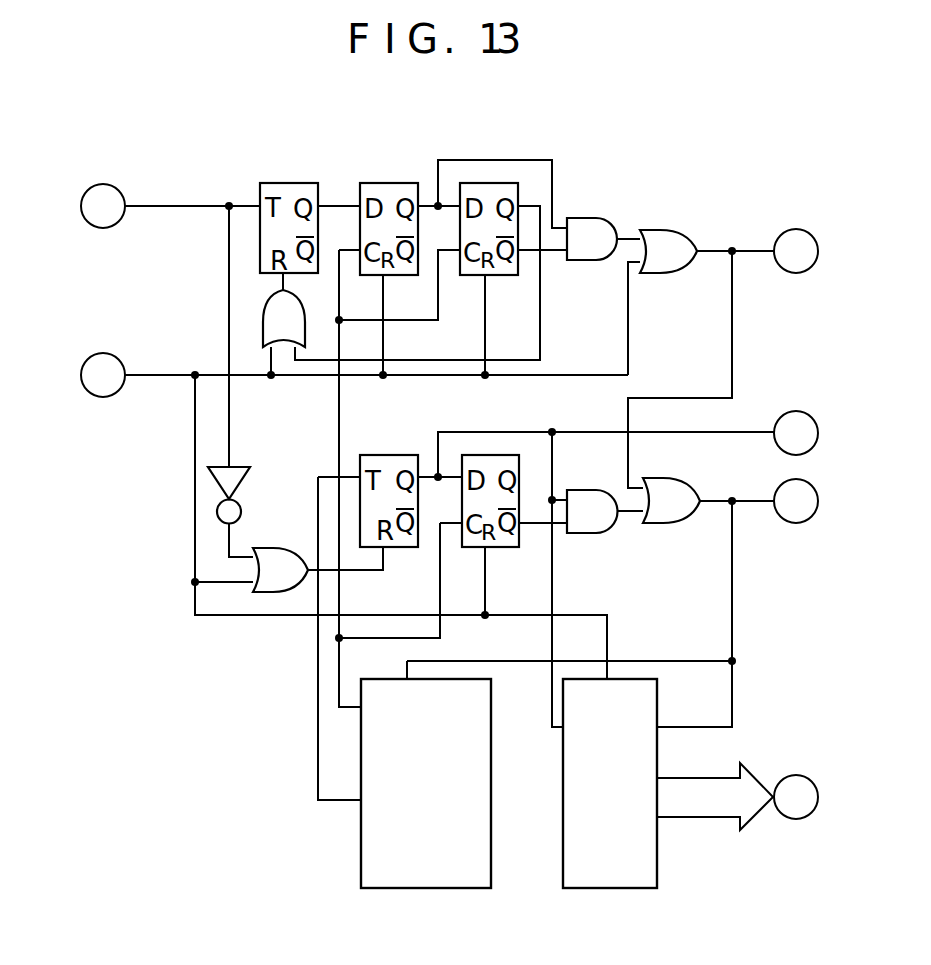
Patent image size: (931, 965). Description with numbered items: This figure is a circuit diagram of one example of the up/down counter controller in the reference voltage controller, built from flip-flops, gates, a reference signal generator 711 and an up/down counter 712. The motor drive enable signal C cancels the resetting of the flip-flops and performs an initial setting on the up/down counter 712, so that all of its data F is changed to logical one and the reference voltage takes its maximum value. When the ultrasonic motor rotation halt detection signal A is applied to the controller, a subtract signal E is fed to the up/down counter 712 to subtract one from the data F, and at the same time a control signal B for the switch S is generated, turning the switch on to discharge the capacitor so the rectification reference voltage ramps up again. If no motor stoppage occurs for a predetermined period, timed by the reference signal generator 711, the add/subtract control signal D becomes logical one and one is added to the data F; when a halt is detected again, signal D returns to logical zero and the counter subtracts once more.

The reference signal generator 711 is at (418, 888).
The up/down counter 712 is at (612, 888).
The rotation halt detection signal A is at (170, 206).
The control signal for the switch S B is at (775, 251).
The motor drive enable signal C is at (138, 375).
The add/subtract control signal D is at (685, 433).
The subtract signal E is at (775, 501).
The data F is at (737, 796).